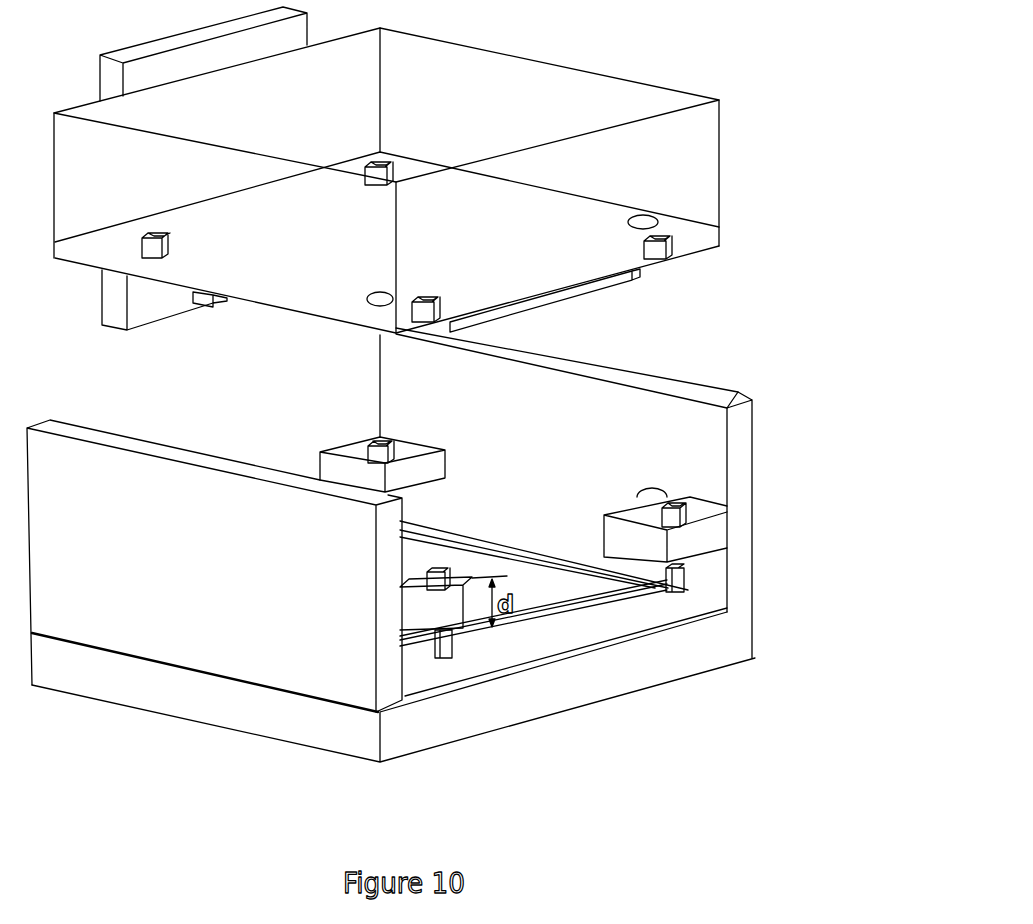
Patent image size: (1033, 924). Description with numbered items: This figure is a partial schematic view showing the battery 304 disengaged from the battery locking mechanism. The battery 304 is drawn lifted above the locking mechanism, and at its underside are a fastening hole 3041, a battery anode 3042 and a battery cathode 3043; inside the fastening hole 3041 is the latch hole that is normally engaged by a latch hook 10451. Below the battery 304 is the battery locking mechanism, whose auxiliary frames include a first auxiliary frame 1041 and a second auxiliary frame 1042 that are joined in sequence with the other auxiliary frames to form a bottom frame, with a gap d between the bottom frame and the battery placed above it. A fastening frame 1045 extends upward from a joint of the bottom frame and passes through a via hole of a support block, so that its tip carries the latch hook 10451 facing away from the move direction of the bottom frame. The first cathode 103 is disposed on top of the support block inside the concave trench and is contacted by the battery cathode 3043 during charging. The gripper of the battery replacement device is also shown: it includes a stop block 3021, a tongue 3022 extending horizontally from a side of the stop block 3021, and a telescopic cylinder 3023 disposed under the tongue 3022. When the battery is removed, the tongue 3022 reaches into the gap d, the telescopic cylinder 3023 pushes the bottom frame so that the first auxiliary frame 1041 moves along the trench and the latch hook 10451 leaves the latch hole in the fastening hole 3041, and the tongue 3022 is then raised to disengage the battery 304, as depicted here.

The battery 304 is at (587, 100).
The stop block 3021 is at (137, 310).
The tongue 3022 is at (593, 283).
The telescopic cylinder 3023 is at (237, 303).
The fastening hole 3041 is at (663, 237).
The battery anode 3042 is at (380, 299).
The battery cathode 3043 is at (643, 222).
The first cathode 103 is at (660, 498).
The latch hook 10451 is at (675, 495).
The fastening frame 1045 is at (677, 565).
The first auxiliary frame 1041 is at (523, 633).
The second auxiliary frame 1042 is at (645, 605).